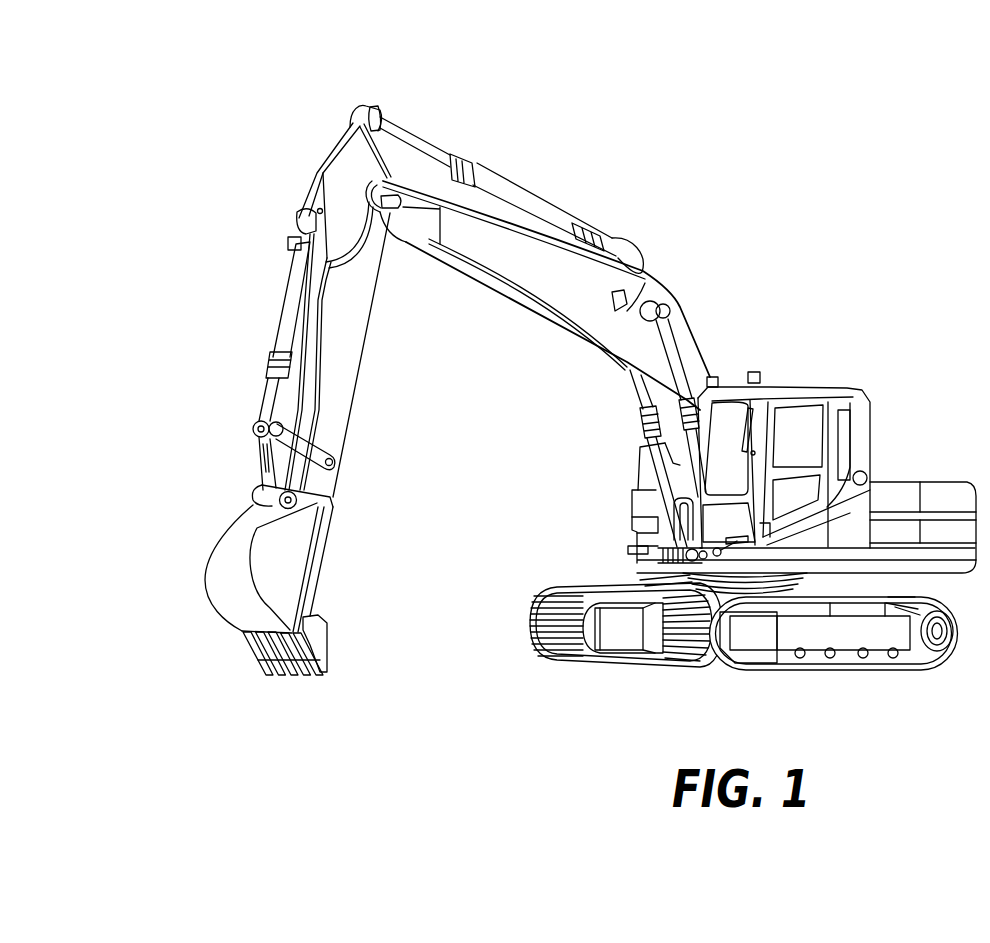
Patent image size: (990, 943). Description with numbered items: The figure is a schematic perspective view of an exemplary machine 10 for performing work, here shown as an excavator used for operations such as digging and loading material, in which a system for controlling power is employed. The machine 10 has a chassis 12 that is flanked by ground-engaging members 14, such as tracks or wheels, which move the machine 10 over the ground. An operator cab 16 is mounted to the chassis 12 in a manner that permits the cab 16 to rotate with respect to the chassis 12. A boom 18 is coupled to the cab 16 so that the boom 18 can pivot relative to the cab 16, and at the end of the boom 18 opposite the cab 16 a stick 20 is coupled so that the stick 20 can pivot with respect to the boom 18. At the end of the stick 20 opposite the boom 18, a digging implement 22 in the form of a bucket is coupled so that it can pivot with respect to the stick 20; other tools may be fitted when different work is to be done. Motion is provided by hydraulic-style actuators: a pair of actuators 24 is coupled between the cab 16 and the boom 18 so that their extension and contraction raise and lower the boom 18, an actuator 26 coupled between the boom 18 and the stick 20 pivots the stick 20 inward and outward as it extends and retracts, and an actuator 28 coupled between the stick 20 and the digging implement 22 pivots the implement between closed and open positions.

The machine 10 is at (590, 422).
The chassis 12 is at (657, 606).
The ground-engaging members 14 is at (531, 617).
The operator cab 16 is at (871, 421).
The boom 18 is at (598, 277).
The stick 20 is at (353, 353).
The digging implement 22 is at (324, 567).
The actuators 24 is at (671, 328).
The actuator 26 is at (496, 187).
The actuator 28 is at (284, 311).